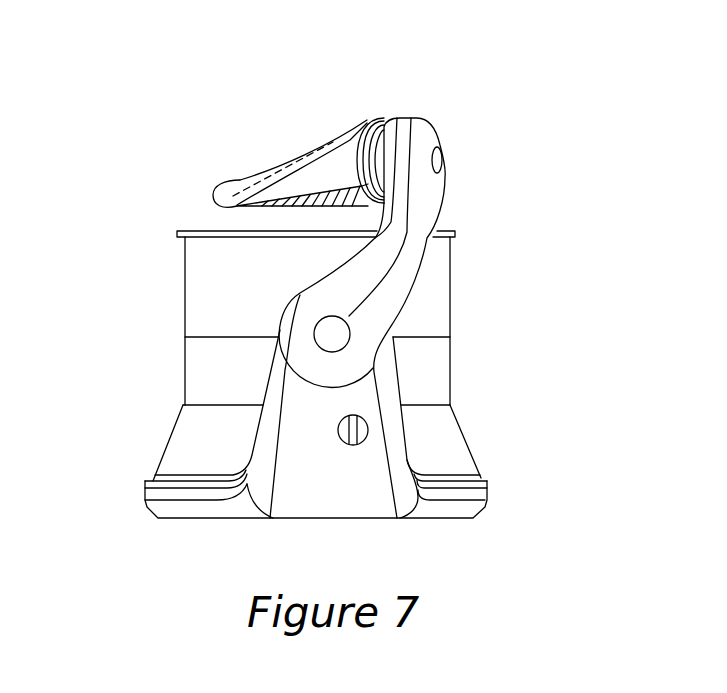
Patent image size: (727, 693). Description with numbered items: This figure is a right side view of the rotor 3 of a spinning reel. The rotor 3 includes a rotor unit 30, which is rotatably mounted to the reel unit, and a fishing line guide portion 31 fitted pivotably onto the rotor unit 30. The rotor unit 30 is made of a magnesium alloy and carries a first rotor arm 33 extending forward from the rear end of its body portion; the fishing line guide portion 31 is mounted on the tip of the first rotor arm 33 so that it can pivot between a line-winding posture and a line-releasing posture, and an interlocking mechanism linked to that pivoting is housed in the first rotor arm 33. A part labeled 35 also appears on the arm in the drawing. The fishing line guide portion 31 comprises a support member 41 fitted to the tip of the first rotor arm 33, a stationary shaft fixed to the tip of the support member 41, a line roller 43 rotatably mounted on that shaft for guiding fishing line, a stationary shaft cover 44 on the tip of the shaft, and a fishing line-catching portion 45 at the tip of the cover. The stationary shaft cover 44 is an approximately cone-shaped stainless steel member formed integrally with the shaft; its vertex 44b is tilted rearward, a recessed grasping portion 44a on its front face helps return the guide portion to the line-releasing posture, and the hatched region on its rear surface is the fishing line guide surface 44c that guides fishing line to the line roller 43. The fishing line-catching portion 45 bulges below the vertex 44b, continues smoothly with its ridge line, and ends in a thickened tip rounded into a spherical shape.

The rotor 3 is at (451, 392).
The rotor unit 30 is at (450, 361).
The fishing line guide portion 31 is at (432, 227).
The first rotor arm 33 is at (396, 465).
The side wall 35 is at (442, 300).
The support member 41 is at (427, 198).
The line roller 43 is at (383, 127).
The stationary shaft cover 44 is at (338, 138).
The grasping portion 44a is at (300, 158).
The vertex 44b is at (213, 198).
The fishing line guide surface 44c is at (286, 208).
The fishing line-catching portion 45 is at (212, 190).